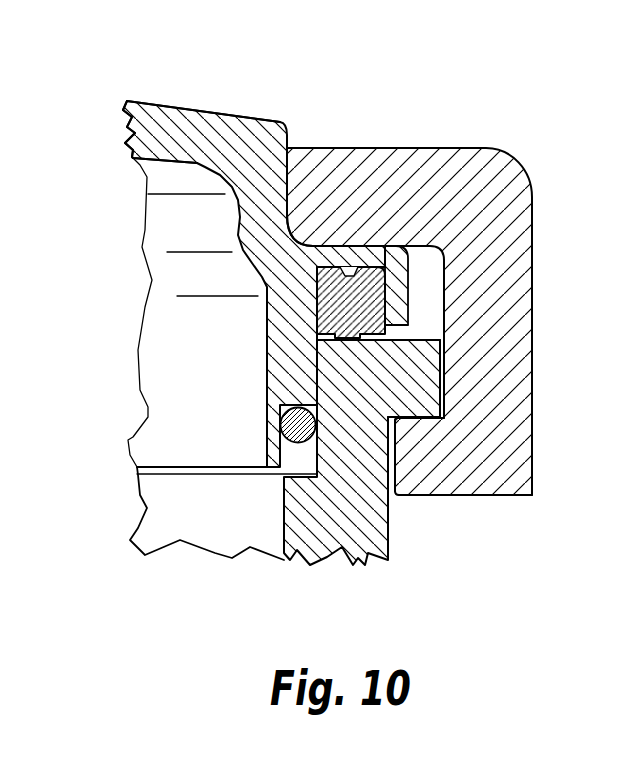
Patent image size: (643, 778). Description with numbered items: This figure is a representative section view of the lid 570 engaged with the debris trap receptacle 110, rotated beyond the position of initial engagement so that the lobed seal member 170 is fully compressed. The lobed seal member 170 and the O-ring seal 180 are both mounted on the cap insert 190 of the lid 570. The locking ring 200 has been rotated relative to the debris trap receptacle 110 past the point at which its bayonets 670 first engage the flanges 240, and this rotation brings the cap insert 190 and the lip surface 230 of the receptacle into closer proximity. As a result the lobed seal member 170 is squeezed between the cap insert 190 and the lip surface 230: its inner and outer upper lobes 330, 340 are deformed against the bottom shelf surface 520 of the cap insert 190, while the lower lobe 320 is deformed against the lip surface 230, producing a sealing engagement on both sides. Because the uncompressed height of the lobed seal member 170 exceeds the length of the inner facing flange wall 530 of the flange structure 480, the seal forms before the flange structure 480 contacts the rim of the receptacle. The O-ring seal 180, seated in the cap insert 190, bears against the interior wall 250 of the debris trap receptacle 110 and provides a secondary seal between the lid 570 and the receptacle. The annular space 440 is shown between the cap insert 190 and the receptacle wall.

The debris trap receptacle 110 is at (333, 562).
The lobed seal member 170 is at (387, 290).
The O-ring seal 180 is at (268, 432).
The cap insert 190 is at (173, 127).
The locking ring 200 is at (467, 182).
The lip surface 230 is at (442, 343).
The flanges 240 is at (400, 423).
The interior wall 250 is at (313, 457).
The lower lobe 320 is at (354, 345).
The inner upper lobe 330 is at (331, 266).
The outer upper lobe 340 is at (350, 272).
The annular space 440 is at (267, 350).
The flange structure 480 is at (408, 301).
The bottom shelf surface 520 is at (317, 295).
The inner facing flange wall 530 is at (386, 323).
The lid 570 is at (304, 140).
The bayonets 670 is at (437, 497).